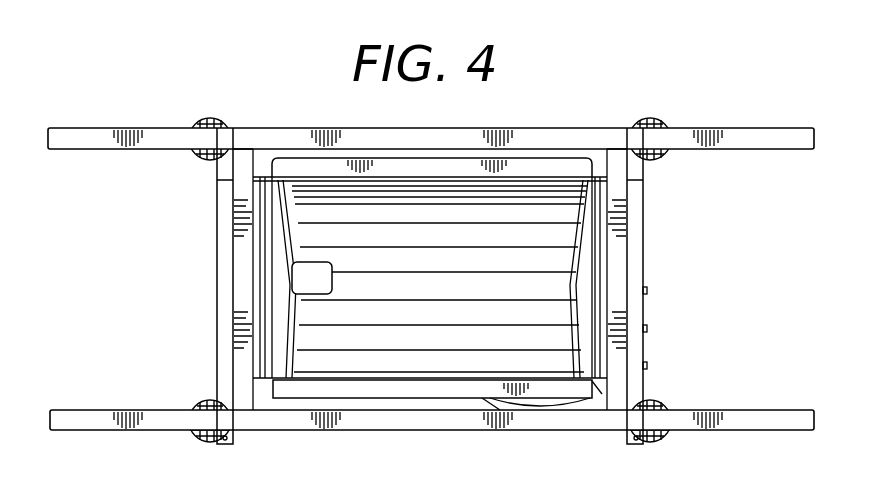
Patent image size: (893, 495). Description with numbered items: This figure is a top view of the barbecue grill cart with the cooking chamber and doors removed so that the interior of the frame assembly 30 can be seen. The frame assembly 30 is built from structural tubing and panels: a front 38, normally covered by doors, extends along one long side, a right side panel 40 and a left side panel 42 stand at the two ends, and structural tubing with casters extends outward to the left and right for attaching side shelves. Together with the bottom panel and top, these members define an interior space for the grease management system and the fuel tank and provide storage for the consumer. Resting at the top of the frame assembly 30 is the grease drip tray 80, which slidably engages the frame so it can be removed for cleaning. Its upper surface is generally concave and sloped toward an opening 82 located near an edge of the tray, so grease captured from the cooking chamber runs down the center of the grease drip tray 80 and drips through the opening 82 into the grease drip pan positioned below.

The frame assembly 30 is at (579, 118).
The front 38 is at (392, 437).
The right side panel 40 is at (653, 257).
The left side panel 42 is at (208, 281).
The grease drip tray 80 is at (457, 234).
The opening 82 is at (326, 290).